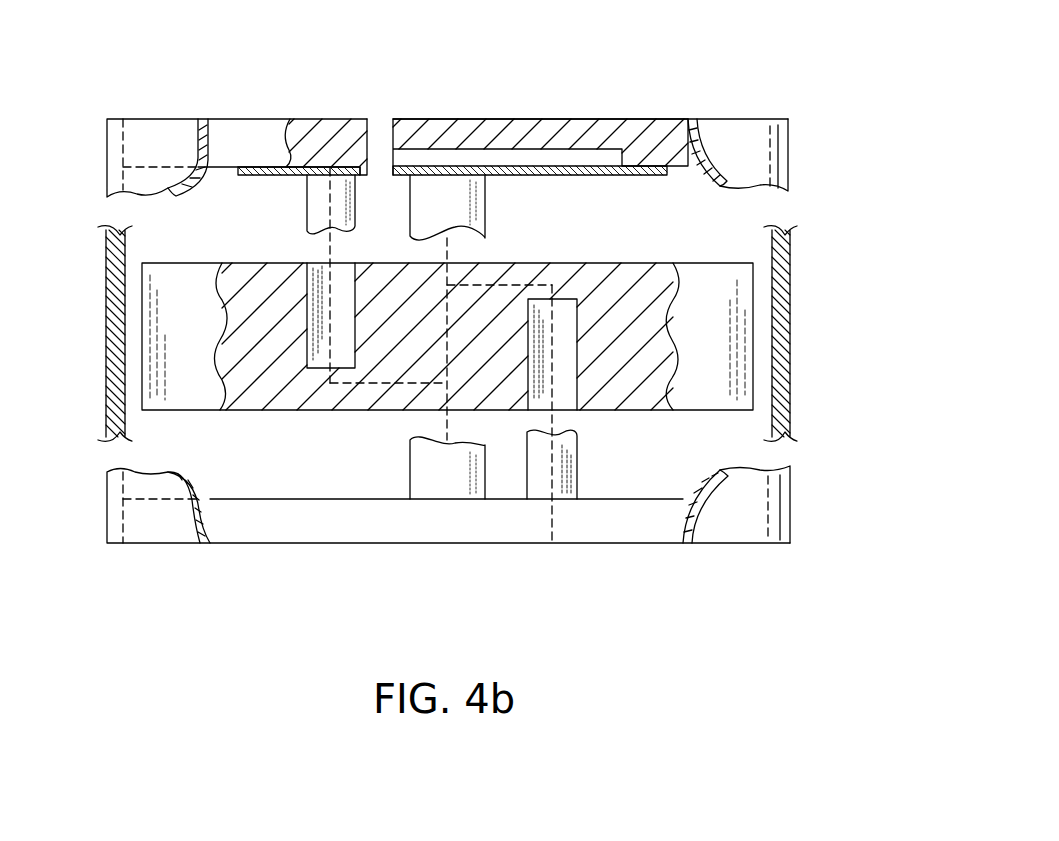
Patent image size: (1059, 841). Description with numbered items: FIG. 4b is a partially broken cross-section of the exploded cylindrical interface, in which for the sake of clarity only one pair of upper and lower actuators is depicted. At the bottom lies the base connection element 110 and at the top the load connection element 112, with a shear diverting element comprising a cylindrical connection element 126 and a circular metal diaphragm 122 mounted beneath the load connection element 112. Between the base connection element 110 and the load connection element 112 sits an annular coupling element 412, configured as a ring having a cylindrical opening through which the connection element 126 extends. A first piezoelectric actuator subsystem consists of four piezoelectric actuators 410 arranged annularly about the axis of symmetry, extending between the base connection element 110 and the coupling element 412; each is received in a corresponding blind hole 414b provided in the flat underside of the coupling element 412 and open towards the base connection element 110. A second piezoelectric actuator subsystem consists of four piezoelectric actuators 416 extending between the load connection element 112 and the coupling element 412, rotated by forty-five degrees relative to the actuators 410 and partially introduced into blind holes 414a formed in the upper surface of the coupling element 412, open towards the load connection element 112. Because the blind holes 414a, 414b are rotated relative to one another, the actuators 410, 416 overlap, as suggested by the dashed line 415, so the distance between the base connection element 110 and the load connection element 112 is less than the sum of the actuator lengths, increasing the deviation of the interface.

The base connection element 110 is at (653, 530).
The load connection element 112 is at (706, 119).
The circular metal diaphragm 122 is at (591, 176).
The cylindrical connection element 126 is at (485, 207).
The piezoelectric actuator 410 is at (577, 480).
The coupling element 412 is at (757, 344).
The blind hole 414a is at (325, 317).
The blind hole 414b is at (563, 372).
The dashed line 415 is at (349, 383).
The piezoelectric actuator 416 is at (344, 172).